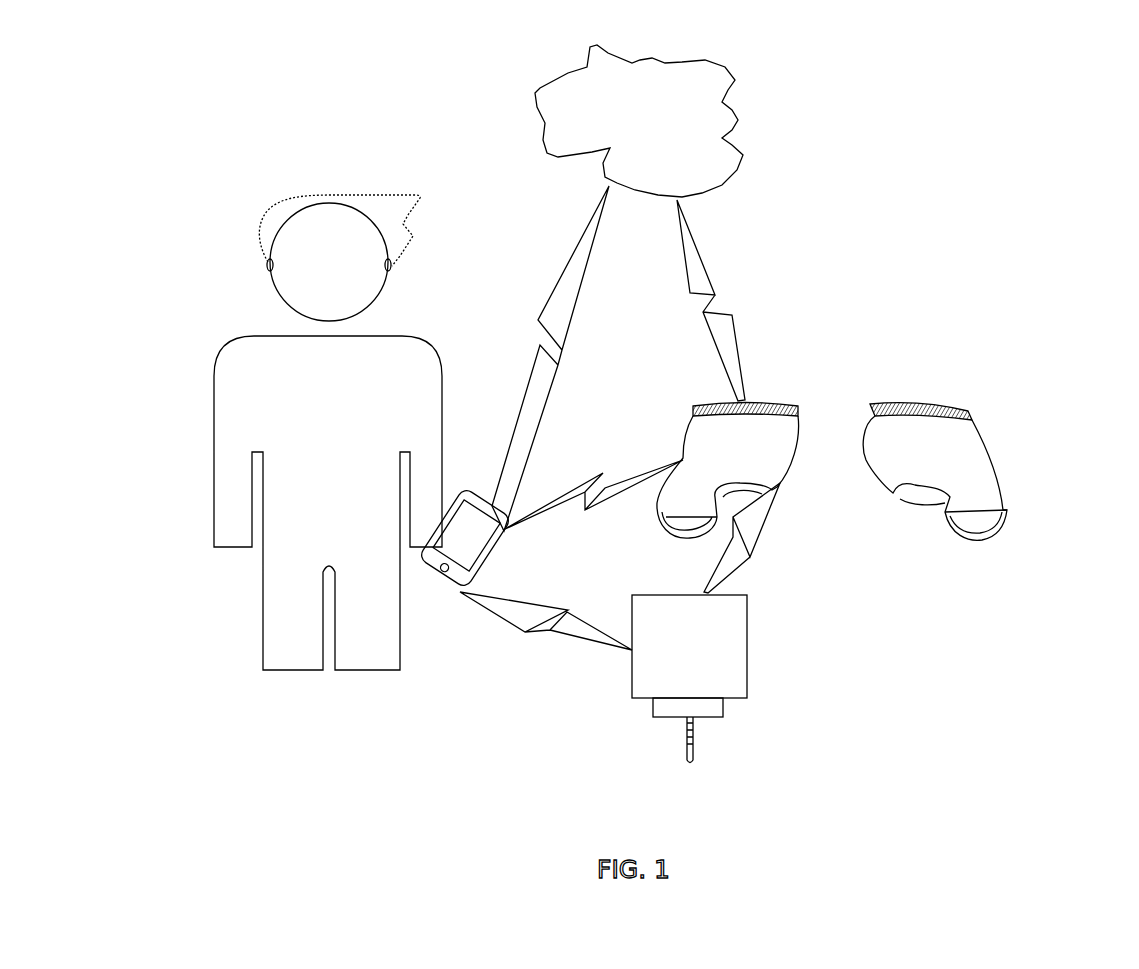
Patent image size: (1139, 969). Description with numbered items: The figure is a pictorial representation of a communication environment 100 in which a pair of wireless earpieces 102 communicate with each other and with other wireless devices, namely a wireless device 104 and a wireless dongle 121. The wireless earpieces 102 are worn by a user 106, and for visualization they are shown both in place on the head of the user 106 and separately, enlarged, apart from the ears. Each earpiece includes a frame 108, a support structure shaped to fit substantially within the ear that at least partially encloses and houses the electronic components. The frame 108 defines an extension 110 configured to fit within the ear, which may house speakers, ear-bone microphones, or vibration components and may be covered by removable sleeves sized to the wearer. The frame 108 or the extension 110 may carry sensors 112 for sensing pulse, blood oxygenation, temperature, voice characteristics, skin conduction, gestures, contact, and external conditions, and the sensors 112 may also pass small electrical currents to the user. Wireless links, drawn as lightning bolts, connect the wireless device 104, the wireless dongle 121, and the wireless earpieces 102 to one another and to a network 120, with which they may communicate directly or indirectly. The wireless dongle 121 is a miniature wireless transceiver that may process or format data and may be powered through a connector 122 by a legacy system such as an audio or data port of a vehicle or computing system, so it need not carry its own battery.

The communication environment 100 is at (965, 787).
The wireless earpieces 102 is at (420, 198).
The wireless device 104 is at (482, 577).
The user 106 is at (344, 412).
The frame 108 is at (963, 427).
The extension 110 is at (977, 482).
The sensors 112 is at (922, 500).
The network 120 is at (655, 134).
The wireless dongle 121 is at (750, 627).
The connector 122 is at (683, 728).